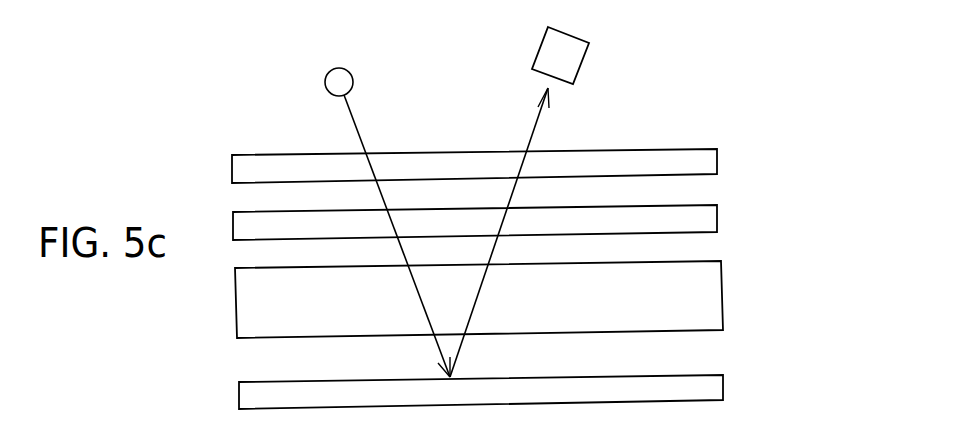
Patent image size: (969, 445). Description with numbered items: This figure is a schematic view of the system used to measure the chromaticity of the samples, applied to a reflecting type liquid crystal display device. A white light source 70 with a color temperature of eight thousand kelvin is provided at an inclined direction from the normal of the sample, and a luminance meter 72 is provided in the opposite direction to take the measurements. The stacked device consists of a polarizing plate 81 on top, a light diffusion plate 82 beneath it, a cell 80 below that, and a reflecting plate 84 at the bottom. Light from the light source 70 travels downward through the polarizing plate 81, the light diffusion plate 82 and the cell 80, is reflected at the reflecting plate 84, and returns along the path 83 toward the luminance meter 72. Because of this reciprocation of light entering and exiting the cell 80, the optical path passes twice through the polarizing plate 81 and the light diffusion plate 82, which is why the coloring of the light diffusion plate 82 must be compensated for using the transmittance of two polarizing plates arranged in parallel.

The white light source 70 is at (353, 74).
The luminance meter 72 is at (577, 62).
The reflected light beam 83 is at (542, 130).
The polarizing plate 81 is at (717, 161).
The light diffusion plate 82 is at (717, 220).
The cell 80 is at (722, 297).
The reflecting plate 84 is at (724, 390).